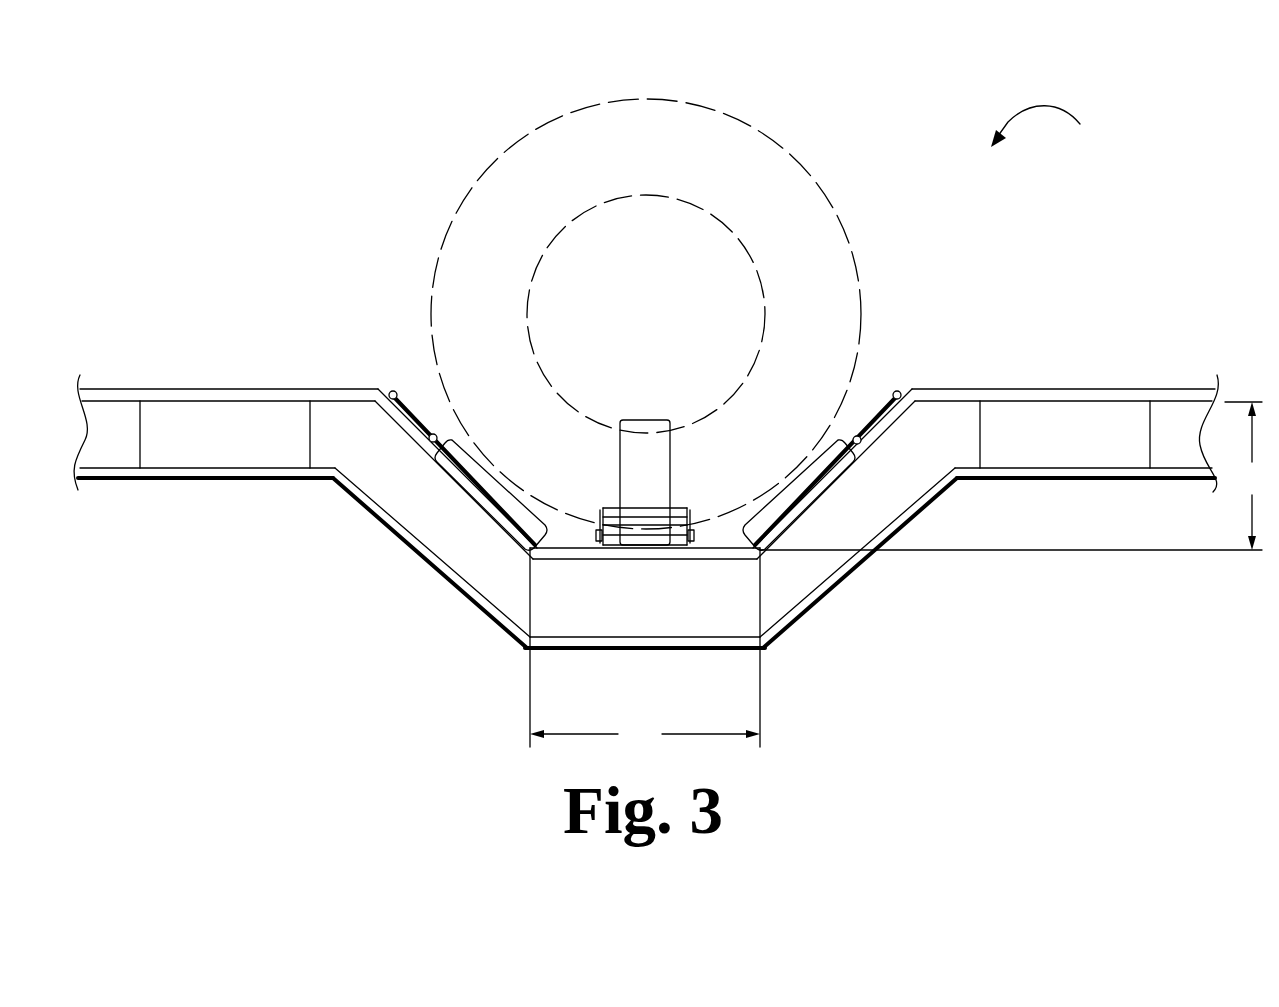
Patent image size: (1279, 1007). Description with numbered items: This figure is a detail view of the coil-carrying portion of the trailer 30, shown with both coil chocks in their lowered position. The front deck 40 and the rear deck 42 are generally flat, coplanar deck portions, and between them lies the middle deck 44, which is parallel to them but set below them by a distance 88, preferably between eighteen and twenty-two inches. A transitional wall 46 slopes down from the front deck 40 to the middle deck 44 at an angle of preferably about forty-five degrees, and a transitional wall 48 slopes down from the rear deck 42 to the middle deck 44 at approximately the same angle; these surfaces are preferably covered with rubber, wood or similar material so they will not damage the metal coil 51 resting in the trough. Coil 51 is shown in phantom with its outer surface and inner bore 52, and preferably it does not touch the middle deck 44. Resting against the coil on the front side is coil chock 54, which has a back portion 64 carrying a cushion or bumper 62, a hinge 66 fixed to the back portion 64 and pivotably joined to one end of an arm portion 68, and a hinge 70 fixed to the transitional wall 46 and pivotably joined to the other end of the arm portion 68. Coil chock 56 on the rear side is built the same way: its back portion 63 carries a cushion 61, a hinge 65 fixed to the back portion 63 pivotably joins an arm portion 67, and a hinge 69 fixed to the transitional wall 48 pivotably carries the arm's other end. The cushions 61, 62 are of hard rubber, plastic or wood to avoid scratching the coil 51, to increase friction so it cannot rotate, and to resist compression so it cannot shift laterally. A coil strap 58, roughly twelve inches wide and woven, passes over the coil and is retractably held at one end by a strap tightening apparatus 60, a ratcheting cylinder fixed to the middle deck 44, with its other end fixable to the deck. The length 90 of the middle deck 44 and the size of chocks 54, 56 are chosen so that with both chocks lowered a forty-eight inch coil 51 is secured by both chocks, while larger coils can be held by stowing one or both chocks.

The trailer 30 is at (1050, 126).
The front deck 40 is at (205, 389).
The rear deck 42 is at (1105, 389).
The middle deck 44 is at (722, 548).
The transitional wall 46 is at (381, 386).
The transitional wall 48 is at (916, 392).
The metal coil 51 is at (660, 98).
The inner rim outline 52 is at (622, 195).
The coil chock 54 is at (410, 523).
The coil chock 56 is at (823, 490).
The coil strap 58 is at (672, 455).
The strap tightening apparatus 60 is at (603, 520).
The cushion 61 is at (788, 470).
The cushion or bumper 62 is at (470, 440).
The back portion 63 is at (770, 610).
The back portion 64 is at (452, 578).
The hinge 65 is at (856, 436).
The hinge 66 is at (433, 434).
The arm portion 67 is at (878, 427).
The arm portion 68 is at (407, 420).
The hinge 69 is at (899, 391).
The hinge 70 is at (394, 391).
The distance 88 is at (1012, 476).
The length 90 is at (645, 736).